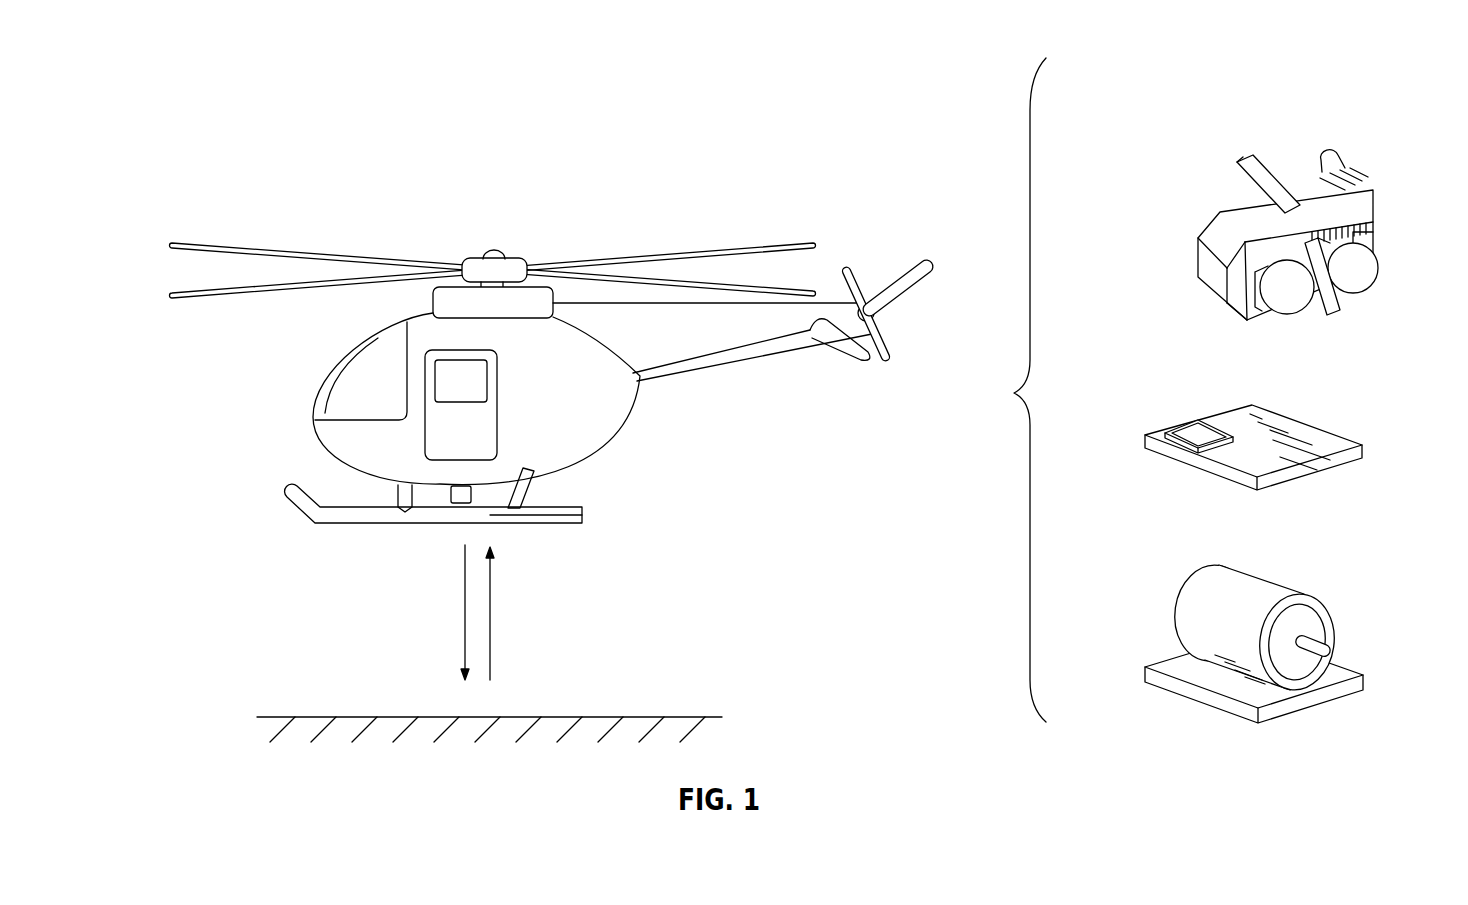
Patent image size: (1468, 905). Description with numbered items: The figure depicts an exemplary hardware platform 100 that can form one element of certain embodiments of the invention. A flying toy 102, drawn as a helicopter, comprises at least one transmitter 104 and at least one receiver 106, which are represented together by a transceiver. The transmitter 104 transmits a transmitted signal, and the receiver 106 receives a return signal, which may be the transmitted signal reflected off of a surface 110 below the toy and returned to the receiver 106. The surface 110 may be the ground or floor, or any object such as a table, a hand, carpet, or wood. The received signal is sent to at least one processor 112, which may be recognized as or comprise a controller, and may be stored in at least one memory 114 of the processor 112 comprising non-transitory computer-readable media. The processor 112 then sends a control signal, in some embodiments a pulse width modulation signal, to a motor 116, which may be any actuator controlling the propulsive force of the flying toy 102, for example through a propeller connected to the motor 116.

The hardware platform 100 is at (176, 149).
The flying toy 102 is at (362, 352).
The transmitter 104 is at (1276, 338).
The receiver 106 is at (1368, 303).
The surface 110 is at (293, 717).
The processor 112 is at (1283, 422).
The memory 114 is at (1187, 432).
The motor 116 is at (1273, 578).